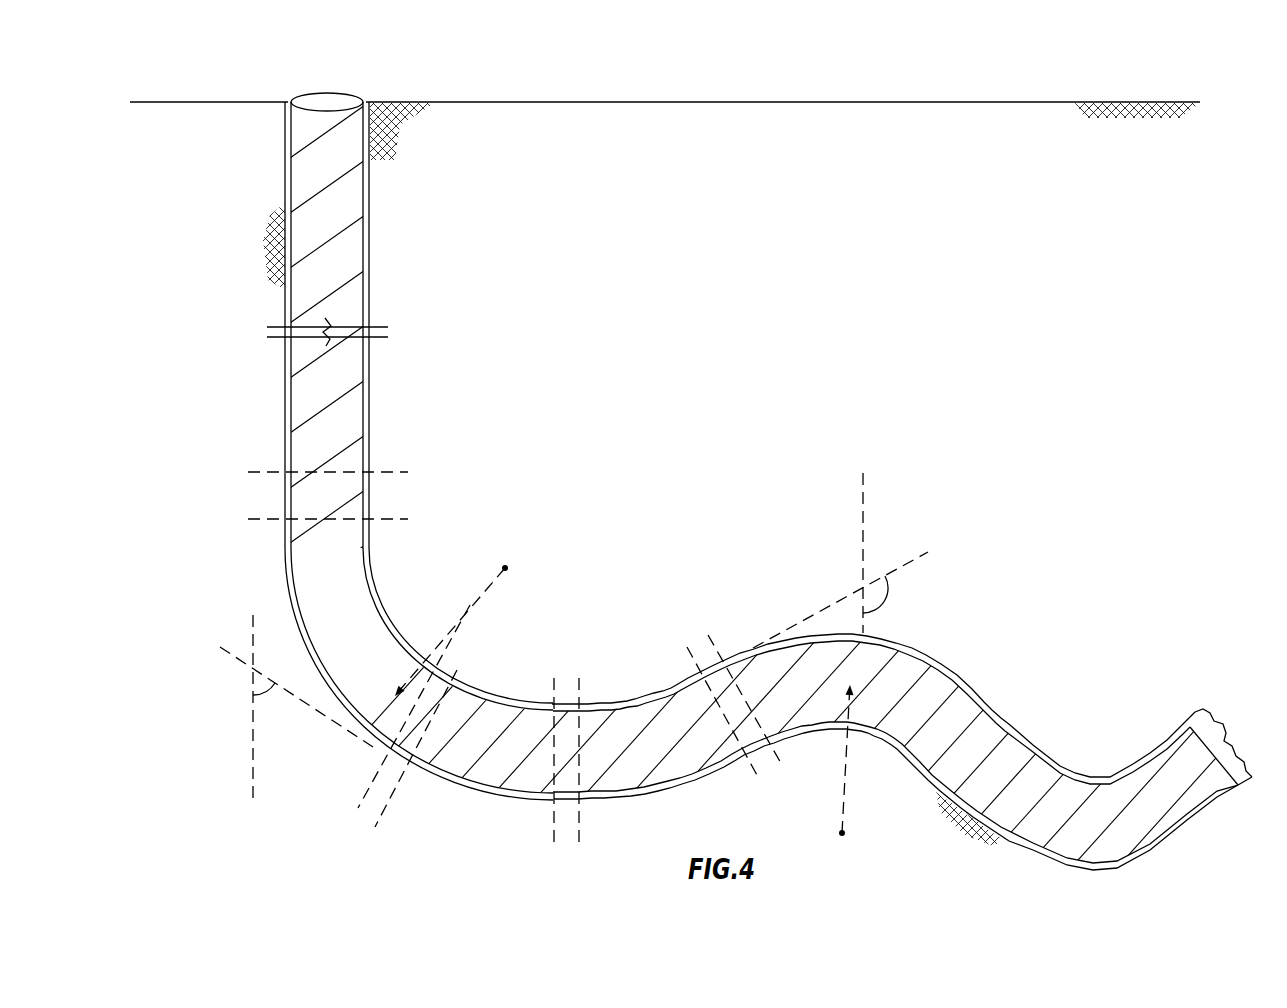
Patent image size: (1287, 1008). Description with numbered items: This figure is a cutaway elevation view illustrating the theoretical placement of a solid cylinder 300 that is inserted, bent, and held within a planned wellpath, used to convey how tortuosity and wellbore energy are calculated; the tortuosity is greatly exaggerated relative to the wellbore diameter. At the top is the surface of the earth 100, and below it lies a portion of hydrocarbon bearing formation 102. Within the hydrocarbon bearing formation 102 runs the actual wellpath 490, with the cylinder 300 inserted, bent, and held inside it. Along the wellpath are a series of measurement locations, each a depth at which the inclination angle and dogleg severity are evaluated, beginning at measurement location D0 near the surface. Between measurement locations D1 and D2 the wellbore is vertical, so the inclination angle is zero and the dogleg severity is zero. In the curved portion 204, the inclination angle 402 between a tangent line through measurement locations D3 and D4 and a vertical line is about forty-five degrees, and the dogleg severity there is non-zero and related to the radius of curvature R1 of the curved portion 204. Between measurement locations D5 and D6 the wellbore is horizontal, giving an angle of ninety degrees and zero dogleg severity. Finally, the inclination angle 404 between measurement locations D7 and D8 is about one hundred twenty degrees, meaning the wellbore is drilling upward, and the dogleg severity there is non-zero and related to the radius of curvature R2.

The surface of the earth 100 is at (910, 101).
The hydrocarbon bearing formation 102 is at (430, 396).
The curved portion 204 is at (432, 562).
The cylinder 300 is at (352, 96).
The actual wellpath 490 is at (370, 194).
The angle α 402 is at (298, 738).
The angle α 404 is at (933, 582).
The measurement location D0 is at (284, 101).
The measurement location D1 is at (311, 469).
The measurement location D2 is at (311, 517).
The measurement location D3 is at (401, 722).
The measurement location D4 is at (409, 766).
The measurement location D5 is at (543, 779).
The measurement location D6 is at (587, 779).
The measurement location D7 is at (708, 698).
The measurement location D8 is at (742, 689).
The radius of curvature R1 is at (467, 612).
The radius of curvature R2 is at (843, 757).